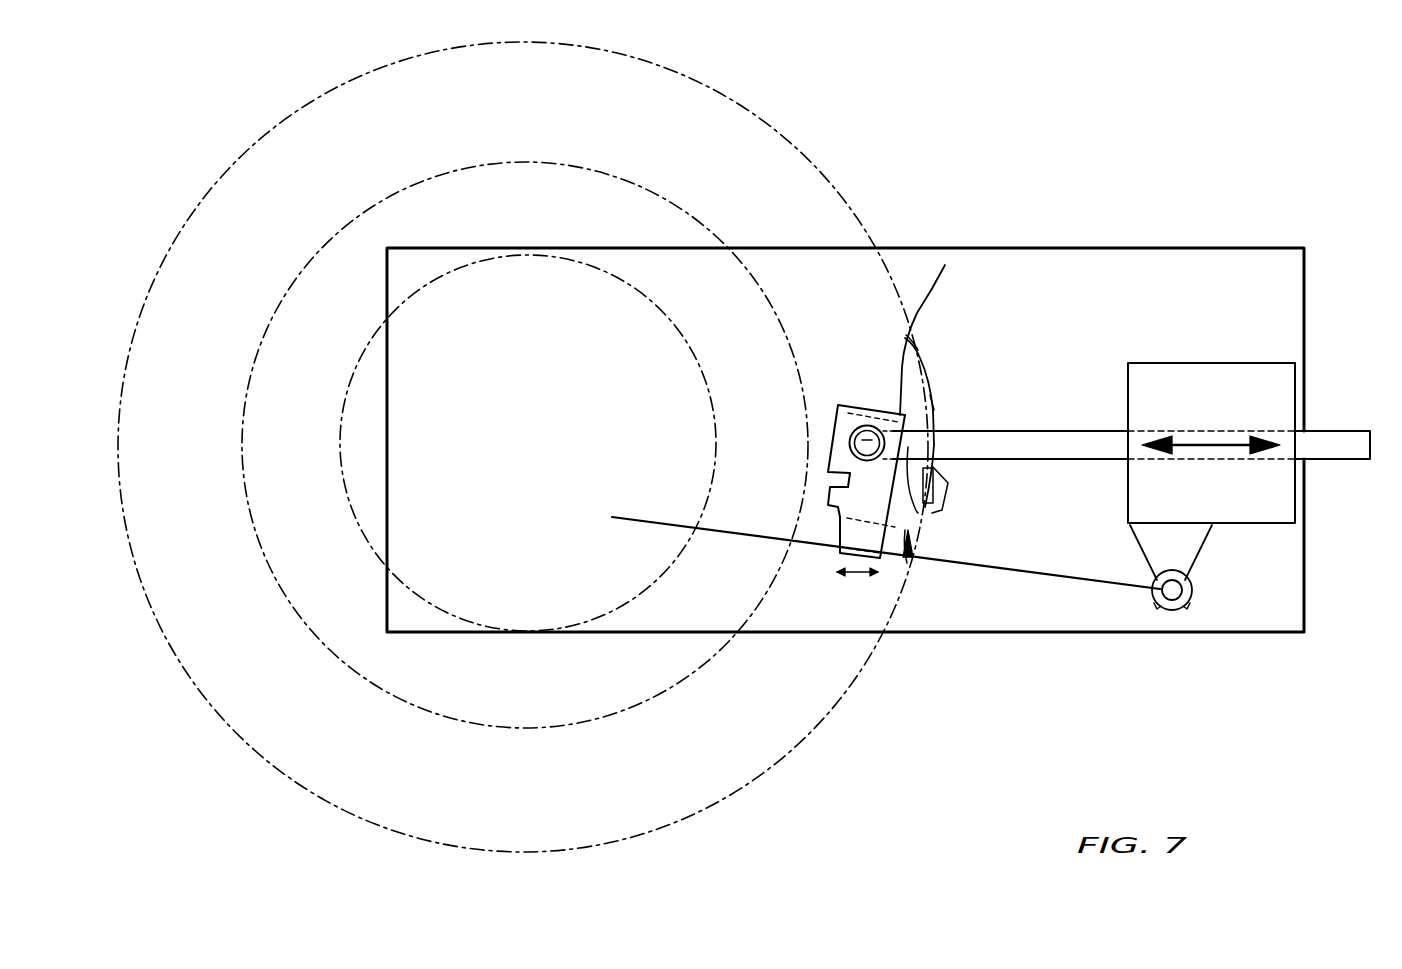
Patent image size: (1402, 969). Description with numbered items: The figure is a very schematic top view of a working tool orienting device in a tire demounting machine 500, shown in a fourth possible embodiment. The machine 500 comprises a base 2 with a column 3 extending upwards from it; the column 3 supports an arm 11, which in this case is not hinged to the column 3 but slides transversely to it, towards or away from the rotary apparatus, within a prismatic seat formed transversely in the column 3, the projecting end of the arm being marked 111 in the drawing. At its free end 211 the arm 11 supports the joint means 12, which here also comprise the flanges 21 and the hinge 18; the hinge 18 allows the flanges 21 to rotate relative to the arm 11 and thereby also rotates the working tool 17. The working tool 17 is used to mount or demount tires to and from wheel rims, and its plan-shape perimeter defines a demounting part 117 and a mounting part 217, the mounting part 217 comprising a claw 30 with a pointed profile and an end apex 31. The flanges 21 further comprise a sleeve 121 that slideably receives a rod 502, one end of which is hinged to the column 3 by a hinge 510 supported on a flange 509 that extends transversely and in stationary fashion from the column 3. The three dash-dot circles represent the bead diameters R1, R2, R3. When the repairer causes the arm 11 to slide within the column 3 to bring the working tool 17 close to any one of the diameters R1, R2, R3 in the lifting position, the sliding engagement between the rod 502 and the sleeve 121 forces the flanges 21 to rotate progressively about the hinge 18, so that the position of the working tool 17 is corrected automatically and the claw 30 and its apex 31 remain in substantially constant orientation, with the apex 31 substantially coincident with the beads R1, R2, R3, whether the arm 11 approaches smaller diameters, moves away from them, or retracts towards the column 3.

The tire demounting machine 500 is at (1113, 222).
The base 2 is at (1140, 290).
The column 3 is at (1197, 392).
The arm 11 is at (998, 432).
The rod end 111 is at (1315, 450).
The joint means 12 is at (822, 457).
The sleeve 121 is at (858, 540).
The working tool 17 is at (907, 563).
The hinge 18 is at (862, 440).
The flanges 21 is at (846, 405).
The free end 211 is at (915, 518).
The mounting part 217 is at (937, 397).
The demounting part 117 is at (918, 513).
The claw 30 is at (945, 265).
The end apex 31 is at (922, 347).
The rod 502 is at (753, 538).
The flange 509 is at (1183, 548).
The hinge 510 is at (1168, 596).
The bead diameter R1 is at (707, 390).
The bead diameter R2 is at (807, 407).
The bead diameter R3 is at (895, 287).